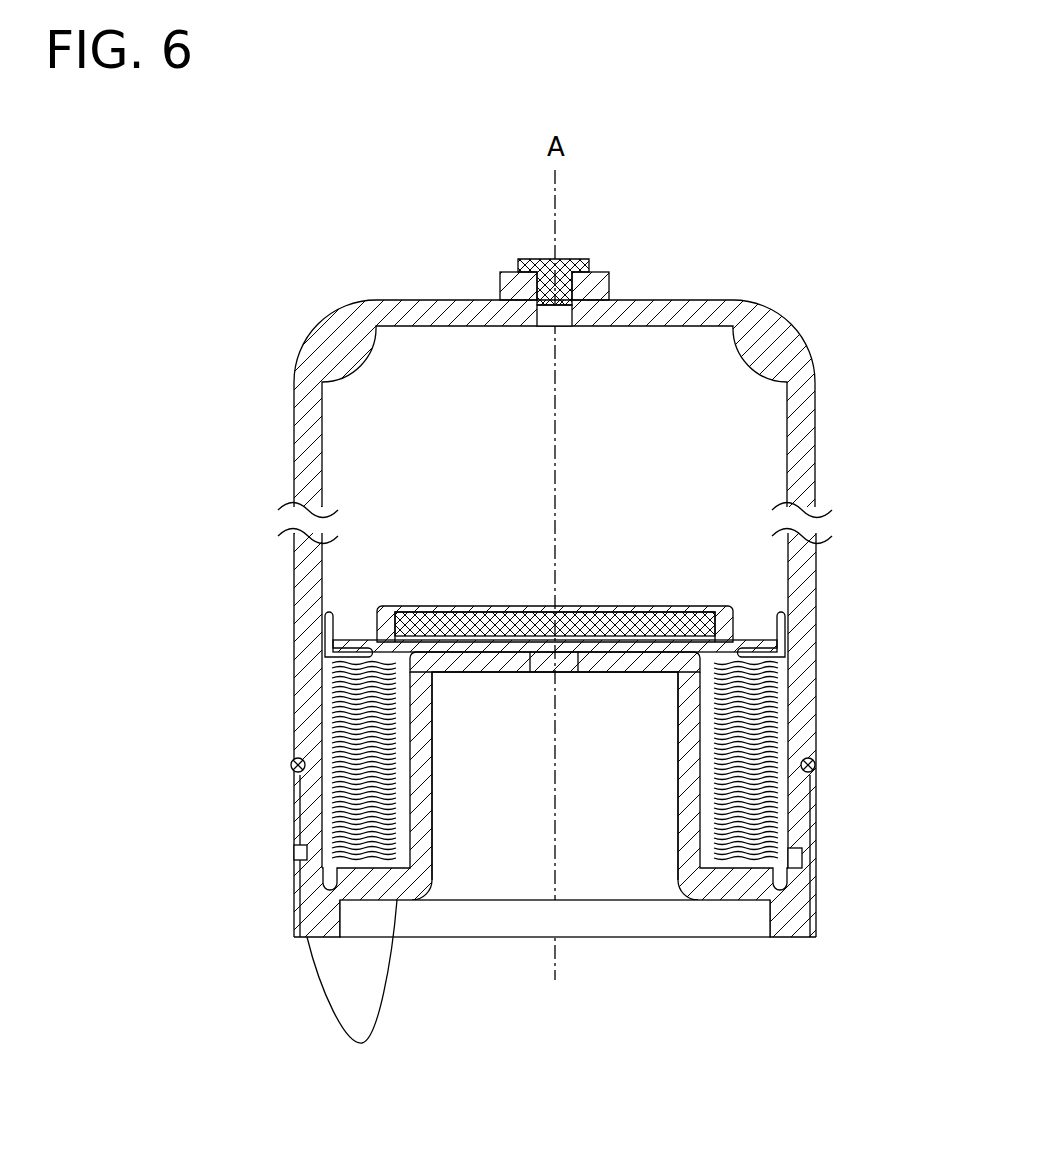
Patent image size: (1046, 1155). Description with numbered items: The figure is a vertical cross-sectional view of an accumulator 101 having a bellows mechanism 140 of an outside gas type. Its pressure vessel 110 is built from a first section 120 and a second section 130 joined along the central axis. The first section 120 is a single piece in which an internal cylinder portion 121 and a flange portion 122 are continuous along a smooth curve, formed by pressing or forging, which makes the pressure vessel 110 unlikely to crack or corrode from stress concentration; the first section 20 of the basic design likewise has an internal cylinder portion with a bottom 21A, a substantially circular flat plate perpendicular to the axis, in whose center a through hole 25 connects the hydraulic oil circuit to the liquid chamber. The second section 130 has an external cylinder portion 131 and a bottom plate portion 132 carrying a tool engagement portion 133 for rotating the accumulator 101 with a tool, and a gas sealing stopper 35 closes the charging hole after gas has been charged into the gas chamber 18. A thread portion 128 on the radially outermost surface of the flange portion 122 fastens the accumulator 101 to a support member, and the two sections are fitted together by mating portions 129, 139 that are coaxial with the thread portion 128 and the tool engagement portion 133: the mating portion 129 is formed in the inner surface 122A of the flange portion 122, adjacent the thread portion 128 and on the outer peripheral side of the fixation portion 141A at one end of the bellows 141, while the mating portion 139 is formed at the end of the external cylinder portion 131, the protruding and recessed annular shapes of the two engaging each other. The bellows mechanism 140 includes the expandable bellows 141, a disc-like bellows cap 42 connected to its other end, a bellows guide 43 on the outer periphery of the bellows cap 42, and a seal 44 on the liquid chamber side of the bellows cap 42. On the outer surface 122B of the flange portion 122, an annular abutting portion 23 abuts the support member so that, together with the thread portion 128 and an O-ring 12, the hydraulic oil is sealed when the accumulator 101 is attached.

The accumulator 101 is at (575, 74).
The pressure vessel 110 is at (103, 455).
The second section 130 is at (169, 335).
The bottom plate portion 132 is at (380, 288).
The external cylinder portion 131 is at (305, 562).
The first section 120 is at (162, 722).
The internal cylinder portion 121 is at (408, 713).
The flange portion 122 is at (225, 880).
The inner surface 122A is at (300, 880).
The outer surface 122B is at (303, 914).
The mating portion 139 is at (300, 845).
The mating portion 129 is at (303, 855).
The thread portion 128 is at (818, 832).
The fixation portion 141A is at (800, 820).
The O-ring 12 is at (815, 765).
The tool engagement portion 133 is at (610, 290).
The gas sealing stopper 35 is at (568, 262).
The gas chamber 18 is at (485, 365).
The bellows mechanism 140 is at (890, 510).
The bellows cap 42 is at (690, 606).
The bellows guide 43 is at (705, 628).
The seal 44 is at (775, 650).
The bellows 141 is at (785, 688).
The through hole 25 is at (570, 672).
The bottom 21A is at (455, 674).
The first section 20 is at (745, 900).
The abutting portion 23 is at (327, 940).